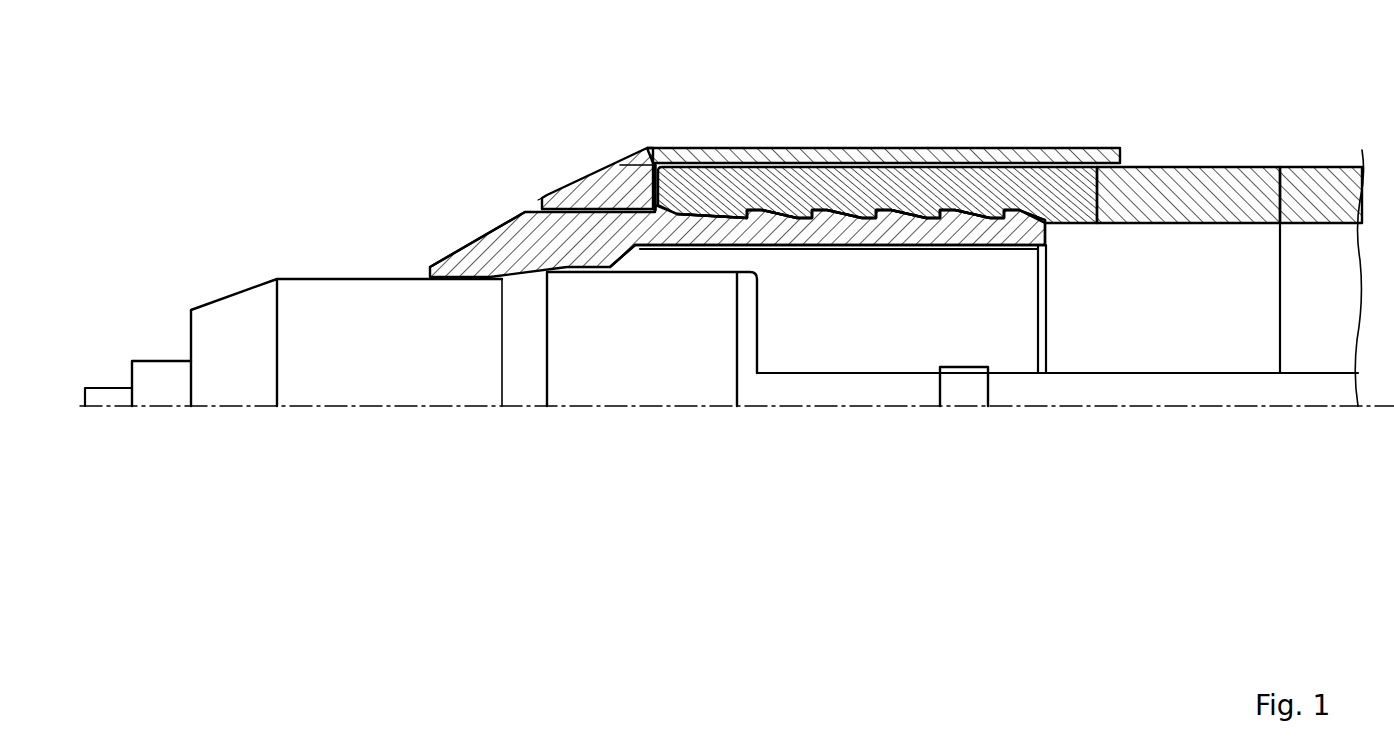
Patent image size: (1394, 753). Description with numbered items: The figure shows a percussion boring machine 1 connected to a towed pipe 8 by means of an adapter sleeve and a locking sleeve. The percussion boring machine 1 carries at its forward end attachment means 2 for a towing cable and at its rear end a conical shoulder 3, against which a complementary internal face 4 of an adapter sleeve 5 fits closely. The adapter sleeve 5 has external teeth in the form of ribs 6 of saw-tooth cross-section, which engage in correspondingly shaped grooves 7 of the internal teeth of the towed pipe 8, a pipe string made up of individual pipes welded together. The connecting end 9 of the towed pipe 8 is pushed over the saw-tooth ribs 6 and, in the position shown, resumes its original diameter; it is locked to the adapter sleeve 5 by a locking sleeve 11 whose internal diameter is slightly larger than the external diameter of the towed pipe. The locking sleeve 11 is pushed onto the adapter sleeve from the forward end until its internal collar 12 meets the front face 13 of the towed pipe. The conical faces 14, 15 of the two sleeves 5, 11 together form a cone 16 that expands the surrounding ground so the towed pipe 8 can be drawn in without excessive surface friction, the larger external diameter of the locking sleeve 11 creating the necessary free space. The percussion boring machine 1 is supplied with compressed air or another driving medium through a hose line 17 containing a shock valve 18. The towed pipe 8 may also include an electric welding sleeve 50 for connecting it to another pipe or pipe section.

The percussion boring machine 1 is at (317, 330).
The attachment means 2 is at (167, 382).
The conical shoulder 3 is at (523, 306).
The internal face 4 is at (530, 273).
The adapter sleeve 5 is at (485, 258).
The ribs 6 is at (887, 214).
The grooves 7 is at (1032, 205).
The towed pipe 8 is at (1308, 190).
The connecting end 9 is at (1240, 187).
The locking sleeve 11 is at (623, 182).
The internal collar 12 is at (652, 167).
The front face 13 is at (663, 183).
The conical face 14 is at (452, 253).
The conical face 15 is at (583, 177).
The cone 16 is at (532, 183).
The hose line 17 is at (913, 387).
The shock valve 18 is at (960, 387).
The electric welding sleeve 50 is at (682, 216).